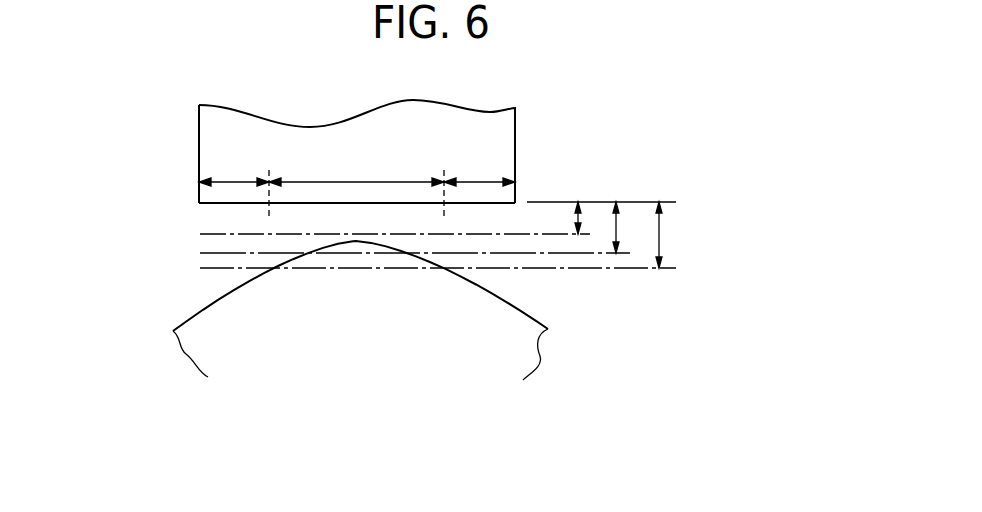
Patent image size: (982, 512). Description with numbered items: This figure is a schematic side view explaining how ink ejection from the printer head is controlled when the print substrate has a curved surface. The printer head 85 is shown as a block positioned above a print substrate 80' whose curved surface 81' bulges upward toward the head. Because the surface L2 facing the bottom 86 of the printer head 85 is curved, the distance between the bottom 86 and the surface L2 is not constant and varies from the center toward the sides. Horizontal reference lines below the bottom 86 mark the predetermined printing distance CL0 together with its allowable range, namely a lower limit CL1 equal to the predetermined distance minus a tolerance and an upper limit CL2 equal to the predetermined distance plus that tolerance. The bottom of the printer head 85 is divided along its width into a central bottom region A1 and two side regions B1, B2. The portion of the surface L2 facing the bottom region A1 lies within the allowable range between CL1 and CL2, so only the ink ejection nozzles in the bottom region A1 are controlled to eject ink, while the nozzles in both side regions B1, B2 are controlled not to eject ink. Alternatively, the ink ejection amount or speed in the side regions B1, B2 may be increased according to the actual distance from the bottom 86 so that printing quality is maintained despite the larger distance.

The printer head 85 is at (356, 148).
The bottom of the printer head 86 is at (218, 204).
The curved surface 81' is at (387, 286).
The print substrate 80' is at (395, 313).
The surface facing the bottom L2 is at (372, 313).
The lower limit of the allowable range of the printing distance CL1 is at (578, 217).
The predetermined printing distance CL0 is at (617, 230).
The upper limit of the allowable range of the printing distance CL2 is at (665, 236).
The bottom region A1 is at (356, 180).
The side region B1 is at (234, 181).
The side region B2 is at (479, 180).